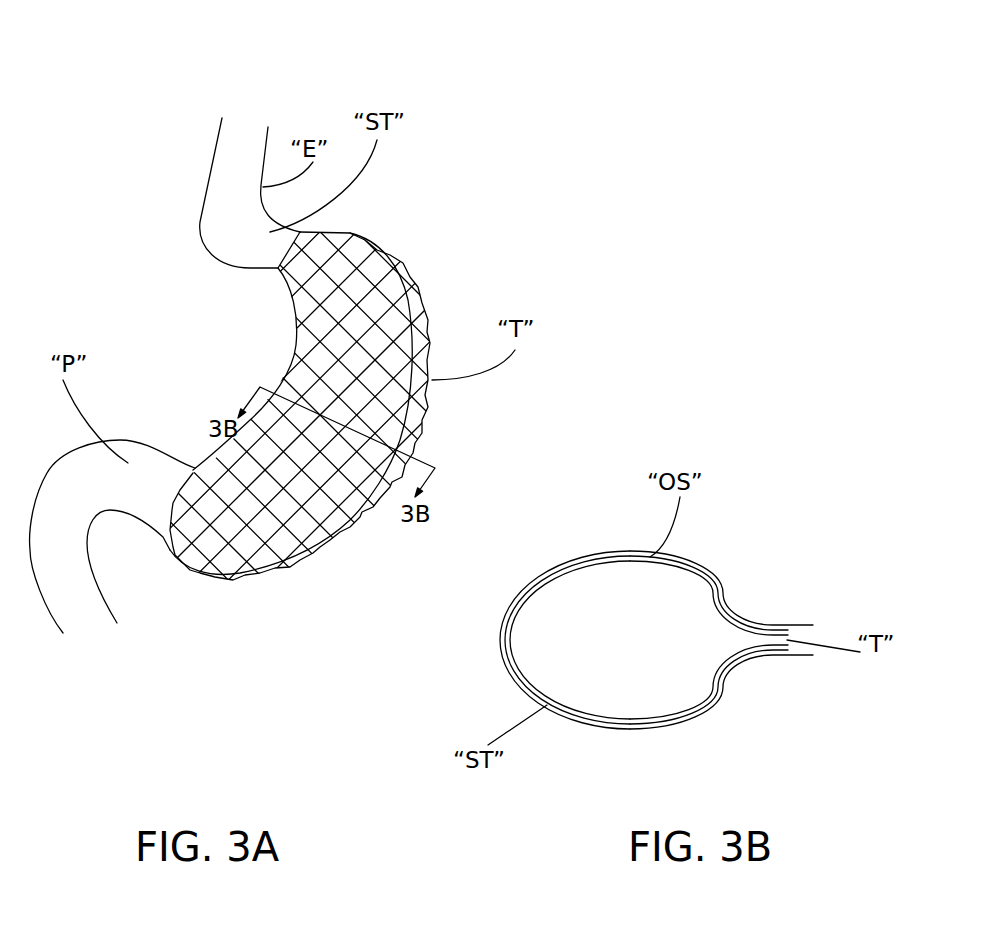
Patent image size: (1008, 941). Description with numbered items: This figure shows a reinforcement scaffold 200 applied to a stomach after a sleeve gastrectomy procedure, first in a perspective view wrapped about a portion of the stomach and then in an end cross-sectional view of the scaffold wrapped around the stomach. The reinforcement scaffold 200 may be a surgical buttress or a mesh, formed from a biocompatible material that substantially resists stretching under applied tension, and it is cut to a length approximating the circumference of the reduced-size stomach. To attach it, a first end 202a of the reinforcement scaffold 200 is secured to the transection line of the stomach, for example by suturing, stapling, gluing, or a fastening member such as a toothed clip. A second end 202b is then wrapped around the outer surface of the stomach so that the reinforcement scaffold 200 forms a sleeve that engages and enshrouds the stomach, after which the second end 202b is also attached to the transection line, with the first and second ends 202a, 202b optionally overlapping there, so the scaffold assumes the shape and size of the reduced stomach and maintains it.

In FIG. 3A, the reinforcement scaffold 200 is at (252, 343).
In FIG. 3B, the reinforcement scaffold 200 is at (616, 635).
In FIG. 3B, the first end 202a is at (743, 607).
In FIG. 3B, the second end 202b is at (750, 667).